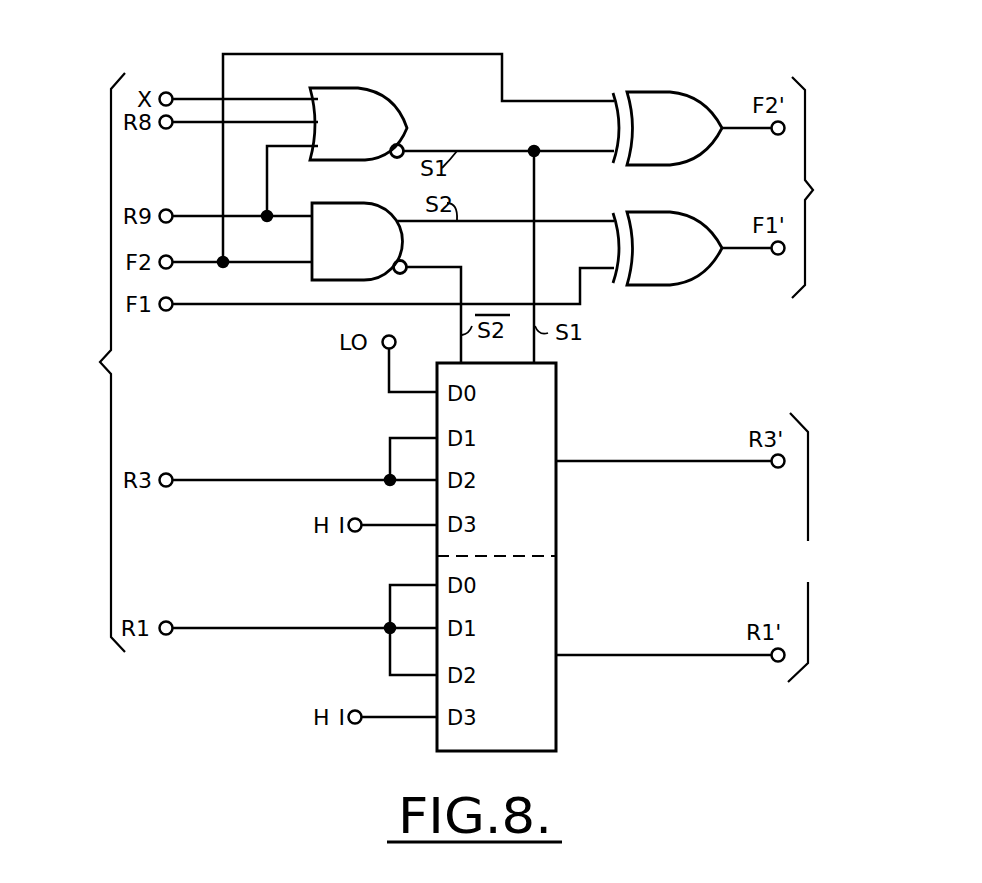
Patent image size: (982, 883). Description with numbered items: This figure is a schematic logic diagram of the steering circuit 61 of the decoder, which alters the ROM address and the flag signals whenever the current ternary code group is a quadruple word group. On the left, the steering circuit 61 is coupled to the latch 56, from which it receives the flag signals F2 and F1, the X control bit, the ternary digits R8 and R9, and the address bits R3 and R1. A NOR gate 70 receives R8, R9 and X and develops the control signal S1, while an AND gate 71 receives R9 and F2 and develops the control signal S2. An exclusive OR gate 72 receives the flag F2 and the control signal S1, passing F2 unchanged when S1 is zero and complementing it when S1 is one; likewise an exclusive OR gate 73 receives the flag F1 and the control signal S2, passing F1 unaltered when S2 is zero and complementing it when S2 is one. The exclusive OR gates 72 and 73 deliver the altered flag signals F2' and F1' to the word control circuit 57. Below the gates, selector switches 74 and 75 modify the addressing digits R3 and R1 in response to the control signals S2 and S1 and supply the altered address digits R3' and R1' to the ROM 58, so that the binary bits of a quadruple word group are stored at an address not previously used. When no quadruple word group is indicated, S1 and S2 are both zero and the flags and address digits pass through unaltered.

The latch 56 is at (72, 399).
The word control circuit 57 is at (855, 250).
The ROM 58 is at (938, 578).
The steering circuit 61 is at (607, 65).
The NOR gate 70 is at (396, 93).
The AND gate 71 is at (350, 203).
The exclusive OR gate 72 is at (690, 92).
The exclusive OR gate 73 is at (700, 272).
The selector switch 74 is at (557, 411).
The selector switch 75 is at (557, 610).